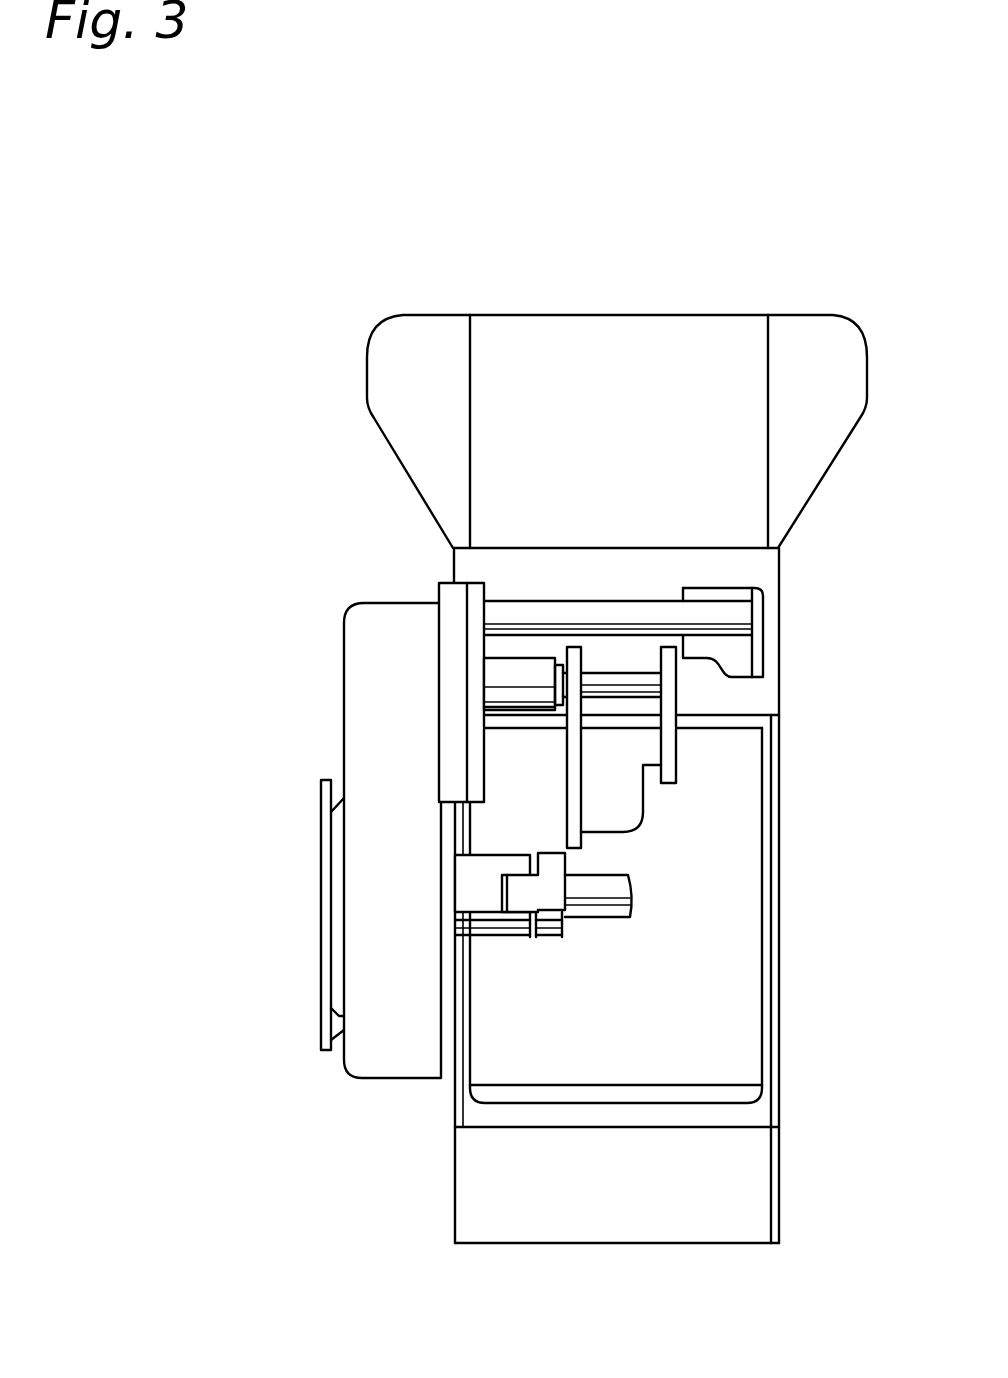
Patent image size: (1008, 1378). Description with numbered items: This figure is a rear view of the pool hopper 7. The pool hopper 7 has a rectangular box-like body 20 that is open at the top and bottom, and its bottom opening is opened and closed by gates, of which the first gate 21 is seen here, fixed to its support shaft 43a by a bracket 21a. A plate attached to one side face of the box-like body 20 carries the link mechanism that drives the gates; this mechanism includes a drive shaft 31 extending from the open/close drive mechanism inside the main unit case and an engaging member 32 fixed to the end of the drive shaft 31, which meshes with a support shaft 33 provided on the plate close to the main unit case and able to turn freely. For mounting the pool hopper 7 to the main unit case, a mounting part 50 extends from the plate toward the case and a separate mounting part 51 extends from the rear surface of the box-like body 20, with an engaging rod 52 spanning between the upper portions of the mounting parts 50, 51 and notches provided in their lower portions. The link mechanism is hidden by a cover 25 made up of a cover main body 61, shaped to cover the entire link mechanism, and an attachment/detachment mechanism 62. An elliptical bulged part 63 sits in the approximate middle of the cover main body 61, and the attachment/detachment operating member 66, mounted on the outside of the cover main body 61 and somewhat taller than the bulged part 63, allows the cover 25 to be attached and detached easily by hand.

The pool hopper 7 is at (588, 276).
The box-like body 20 is at (520, 1202).
The first gate 21 is at (730, 1052).
The bracket 21a is at (625, 808).
The cover 25 is at (317, 897).
The drive shaft 31 is at (597, 902).
The engaging member 32 is at (550, 912).
The support shaft 33 is at (470, 912).
The support shaft 43a is at (515, 675).
The mounting part 50 is at (472, 602).
The mounting part 51 is at (755, 600).
The engaging rod 52 is at (727, 618).
The cover main body 61 is at (367, 722).
The attachment/detachment mechanism 62 is at (268, 935).
The bulged part 63 is at (322, 1048).
The attachment/detachment operating member 66 is at (320, 930).